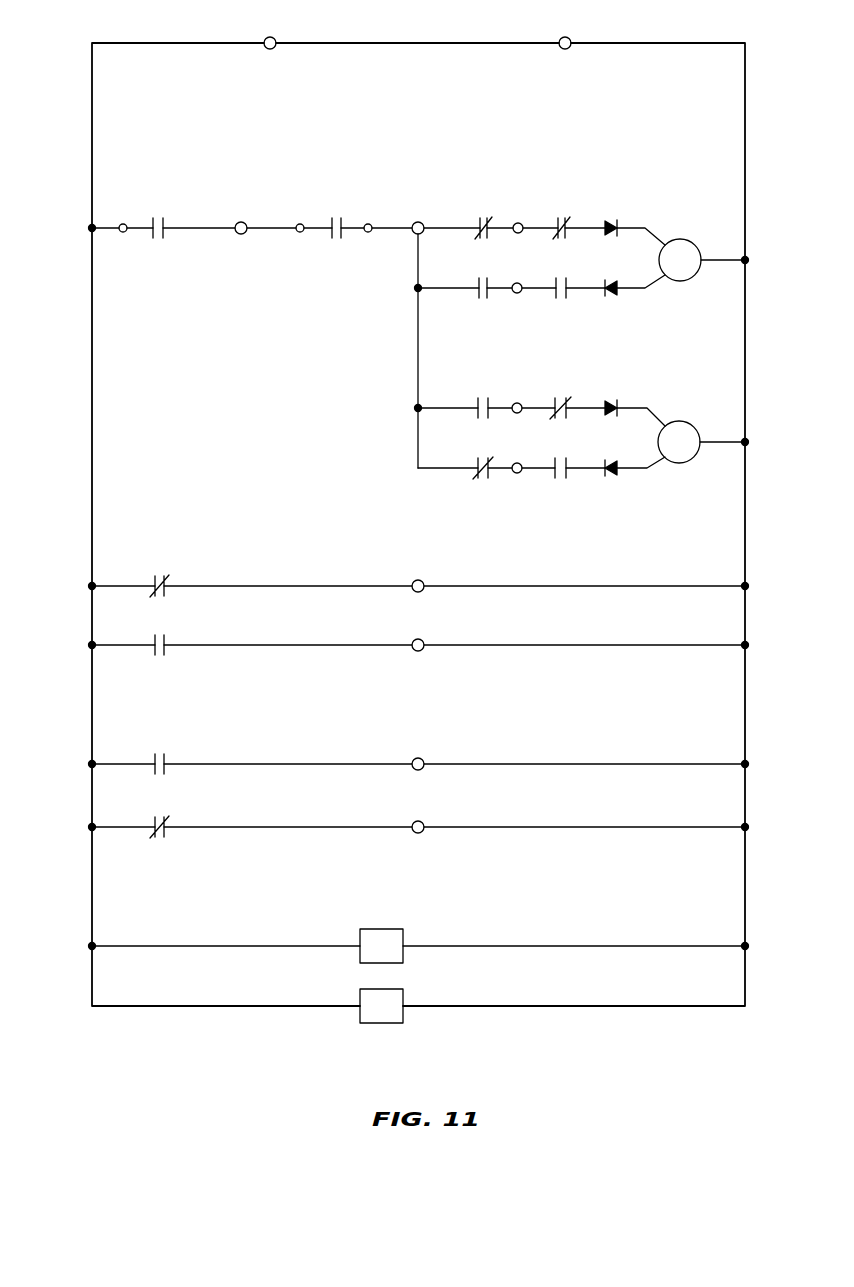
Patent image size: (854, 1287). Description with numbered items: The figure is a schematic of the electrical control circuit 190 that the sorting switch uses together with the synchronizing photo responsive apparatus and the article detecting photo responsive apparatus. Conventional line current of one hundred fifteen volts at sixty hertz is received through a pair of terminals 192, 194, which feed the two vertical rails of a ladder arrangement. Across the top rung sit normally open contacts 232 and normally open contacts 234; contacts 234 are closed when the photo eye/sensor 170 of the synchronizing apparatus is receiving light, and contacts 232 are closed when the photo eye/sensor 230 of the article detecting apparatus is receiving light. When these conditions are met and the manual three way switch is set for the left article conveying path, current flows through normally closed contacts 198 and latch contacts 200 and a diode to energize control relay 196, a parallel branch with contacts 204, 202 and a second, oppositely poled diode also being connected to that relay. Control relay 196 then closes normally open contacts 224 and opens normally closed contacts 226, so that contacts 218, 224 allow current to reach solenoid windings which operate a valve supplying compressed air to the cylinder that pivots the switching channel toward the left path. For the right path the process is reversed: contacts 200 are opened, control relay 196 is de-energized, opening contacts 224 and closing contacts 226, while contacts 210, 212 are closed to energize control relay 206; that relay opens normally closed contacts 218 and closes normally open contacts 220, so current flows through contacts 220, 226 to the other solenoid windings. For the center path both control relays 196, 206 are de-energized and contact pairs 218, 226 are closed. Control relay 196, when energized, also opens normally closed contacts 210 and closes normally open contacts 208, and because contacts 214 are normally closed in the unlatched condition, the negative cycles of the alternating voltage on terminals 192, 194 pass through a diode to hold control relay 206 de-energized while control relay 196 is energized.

The electrical control circuit 190 is at (556, 1033).
The terminal 192 is at (273, 37).
The terminal 194 is at (569, 37).
The control relay 196 is at (695, 245).
The normally closed contacts 198 is at (487, 218).
The latch contacts 200 is at (565, 220).
The normally open contact 202 is at (556, 298).
The normally open contact 204 is at (479, 298).
The control relay 206 is at (693, 427).
The normally open contacts 208 is at (489, 475).
The contacts 210 is at (488, 400).
The contacts 212 is at (566, 400).
The contacts 214 is at (566, 475).
The normally closed contacts 218 is at (164, 578).
The normally open contacts 220 is at (164, 637).
The normally open contacts 224 is at (164, 756).
The normally closed contacts 226 is at (164, 819).
The photo eye/sensor 170 is at (382, 929).
The photo eye/sensor 230 is at (388, 989).
The normally open contacts 232 is at (163, 218).
The normally open contacts 234 is at (341, 218).